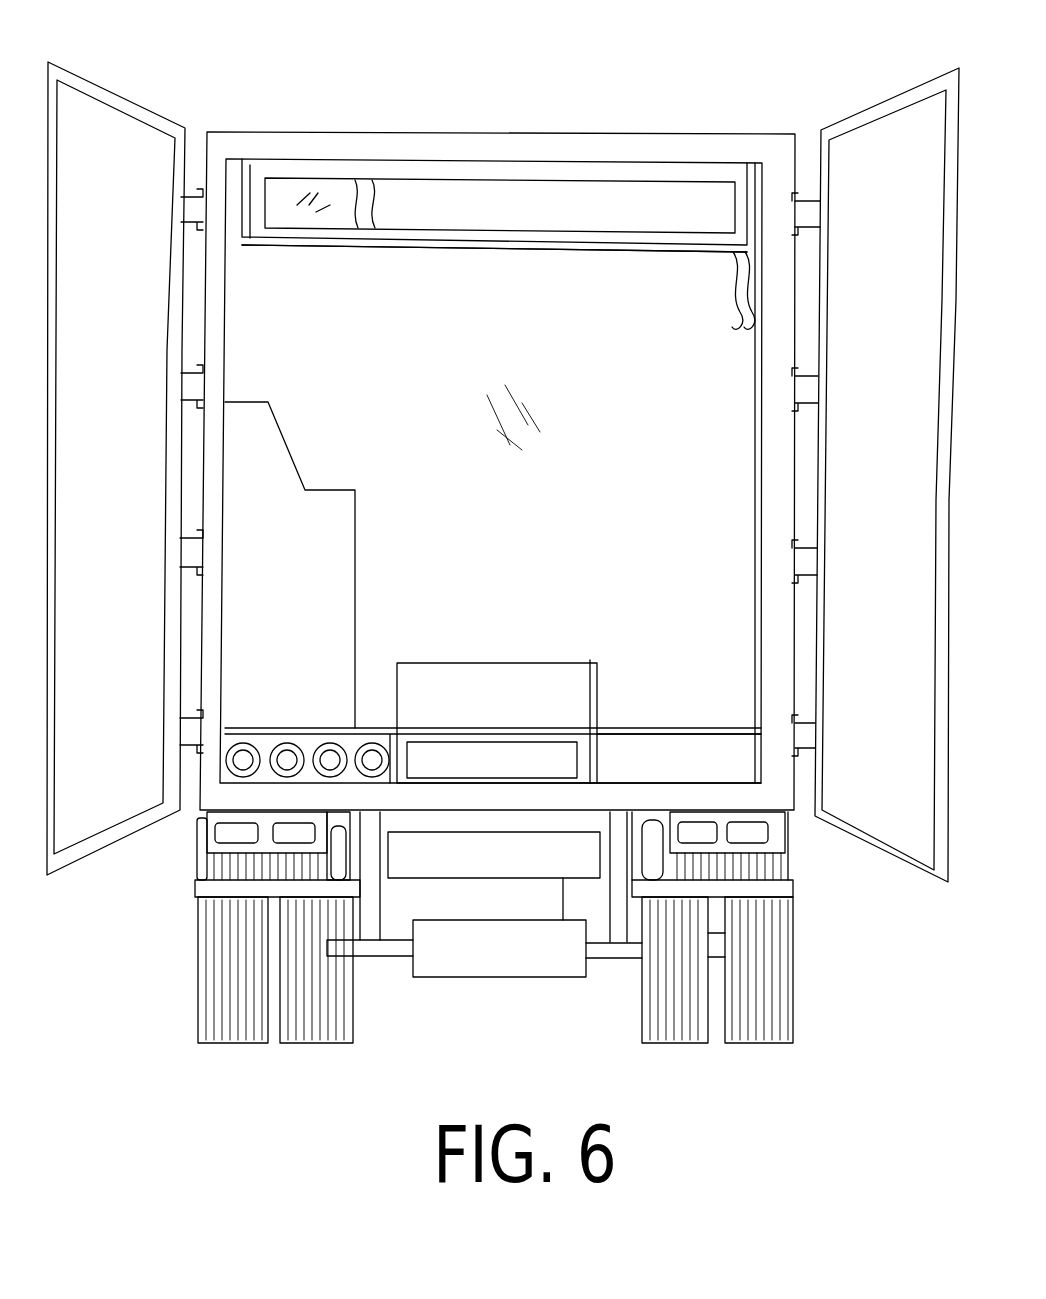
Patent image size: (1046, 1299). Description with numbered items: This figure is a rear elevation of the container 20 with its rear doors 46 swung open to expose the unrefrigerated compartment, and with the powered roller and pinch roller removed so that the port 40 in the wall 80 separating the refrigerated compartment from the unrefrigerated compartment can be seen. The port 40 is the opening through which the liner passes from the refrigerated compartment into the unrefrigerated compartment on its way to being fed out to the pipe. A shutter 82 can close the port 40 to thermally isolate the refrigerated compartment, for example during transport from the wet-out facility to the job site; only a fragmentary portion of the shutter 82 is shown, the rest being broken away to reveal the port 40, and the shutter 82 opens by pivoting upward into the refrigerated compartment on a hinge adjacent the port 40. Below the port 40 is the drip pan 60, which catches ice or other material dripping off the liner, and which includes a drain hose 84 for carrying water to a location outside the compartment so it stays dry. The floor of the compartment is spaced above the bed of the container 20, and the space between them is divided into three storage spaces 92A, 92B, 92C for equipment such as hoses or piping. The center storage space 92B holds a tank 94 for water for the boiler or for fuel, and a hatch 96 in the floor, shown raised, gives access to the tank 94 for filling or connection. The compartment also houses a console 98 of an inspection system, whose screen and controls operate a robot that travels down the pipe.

The container 20 is at (530, 126).
The port 40 is at (638, 185).
The rear doors 46 is at (868, 147).
The drip pan 60 is at (267, 247).
The wall 80 is at (708, 650).
The shutter 82 is at (288, 198).
The drain hose 84 is at (730, 275).
The storage space 92A is at (263, 775).
The center storage space 92B is at (590, 660).
The storage space 92C is at (698, 762).
The tank 94 is at (470, 700).
The hatch 96 is at (518, 690).
The console 98 is at (262, 462).